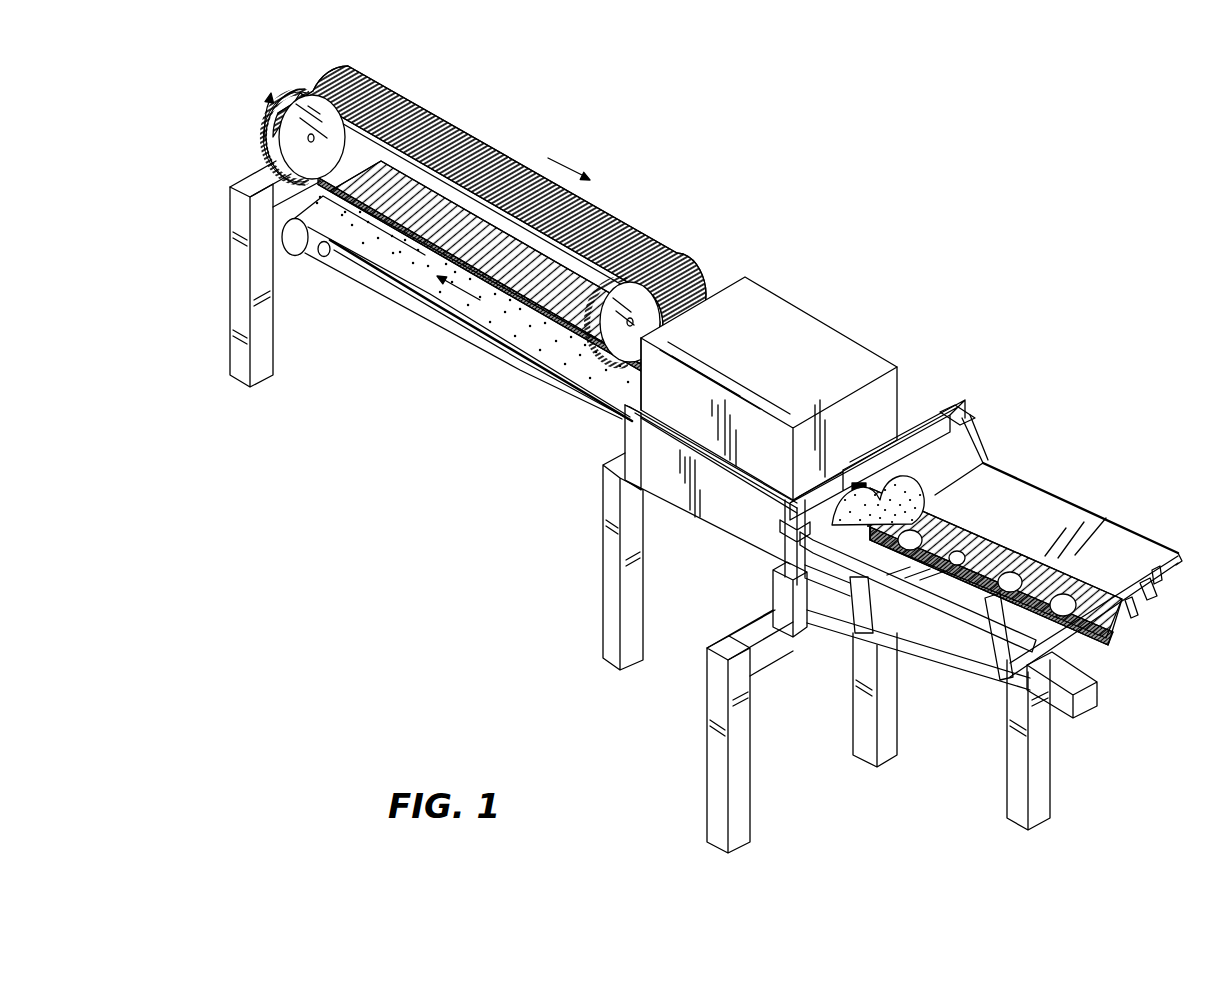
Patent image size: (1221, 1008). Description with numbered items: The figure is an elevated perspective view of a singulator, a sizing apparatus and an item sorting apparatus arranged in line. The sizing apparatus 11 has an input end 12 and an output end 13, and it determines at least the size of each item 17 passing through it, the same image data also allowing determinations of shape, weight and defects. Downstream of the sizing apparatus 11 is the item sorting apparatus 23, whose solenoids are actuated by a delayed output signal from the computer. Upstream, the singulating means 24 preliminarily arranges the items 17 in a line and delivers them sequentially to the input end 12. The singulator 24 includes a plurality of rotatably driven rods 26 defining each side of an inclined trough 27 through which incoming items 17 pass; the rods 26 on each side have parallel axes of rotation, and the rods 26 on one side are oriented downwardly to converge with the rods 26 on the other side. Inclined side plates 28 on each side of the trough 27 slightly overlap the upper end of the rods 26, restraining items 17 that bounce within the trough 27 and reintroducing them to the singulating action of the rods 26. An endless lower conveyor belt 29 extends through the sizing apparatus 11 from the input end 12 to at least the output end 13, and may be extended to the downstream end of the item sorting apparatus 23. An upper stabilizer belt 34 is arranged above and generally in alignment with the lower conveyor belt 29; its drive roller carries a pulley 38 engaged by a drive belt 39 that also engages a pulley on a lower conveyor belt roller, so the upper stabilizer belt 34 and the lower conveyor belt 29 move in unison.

The sizing apparatus 11 is at (851, 321).
The input end 12 is at (917, 409).
The output end 13 is at (716, 283).
The item 17 is at (1037, 560).
The item sorting apparatus 23 is at (598, 154).
The singulating means 24 is at (1117, 498).
The rotatably driven rods 26 is at (968, 530).
The inclined trough 27 is at (1121, 634).
The inclined side plates 28 is at (1124, 543).
The lower conveyor belt 29 is at (378, 253).
The upper stabilizer belt 34 is at (906, 498).
The pulley 38 is at (958, 424).
The drive belt 39 is at (980, 452).